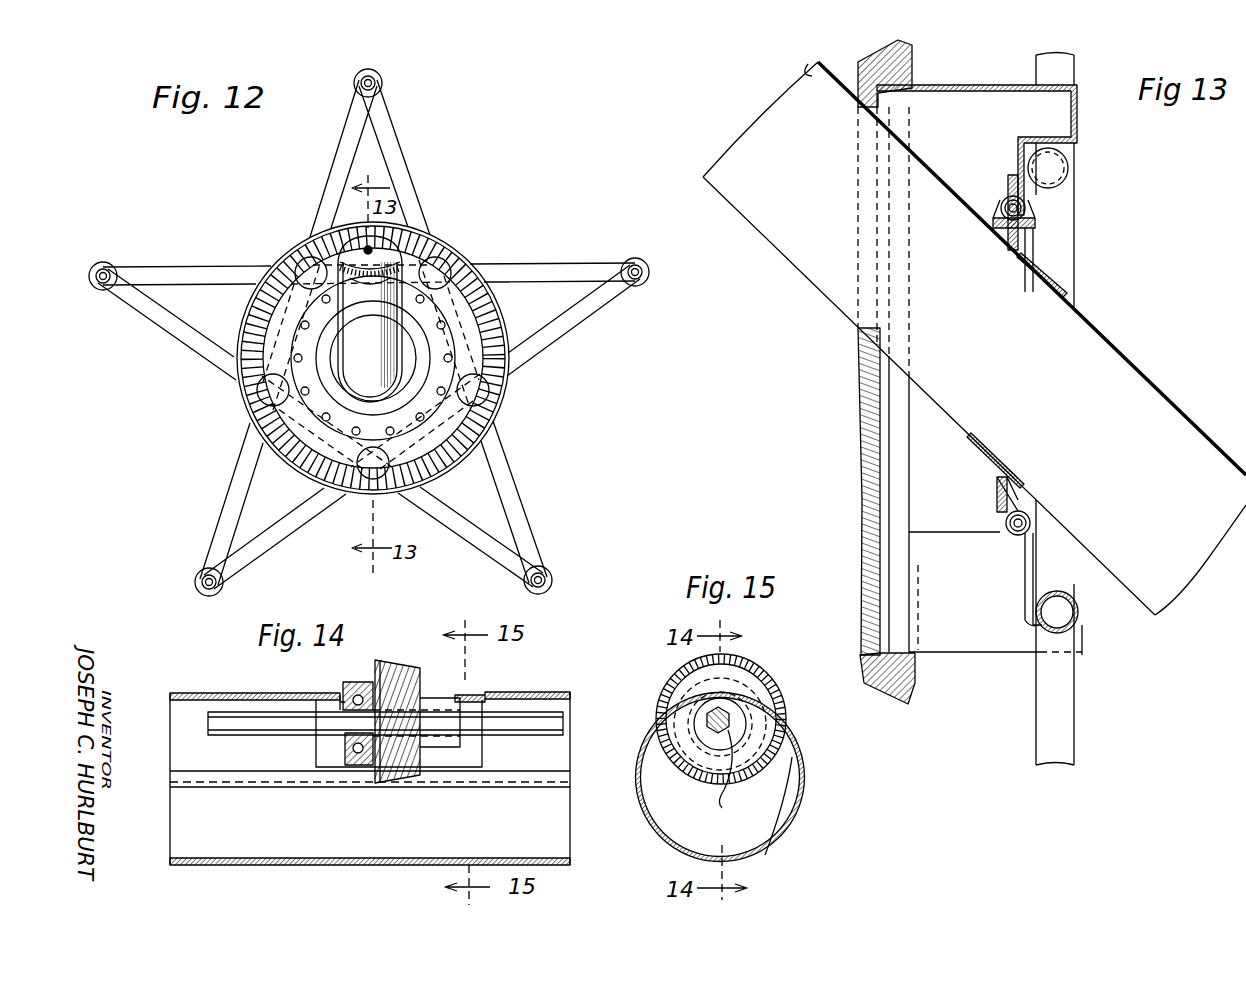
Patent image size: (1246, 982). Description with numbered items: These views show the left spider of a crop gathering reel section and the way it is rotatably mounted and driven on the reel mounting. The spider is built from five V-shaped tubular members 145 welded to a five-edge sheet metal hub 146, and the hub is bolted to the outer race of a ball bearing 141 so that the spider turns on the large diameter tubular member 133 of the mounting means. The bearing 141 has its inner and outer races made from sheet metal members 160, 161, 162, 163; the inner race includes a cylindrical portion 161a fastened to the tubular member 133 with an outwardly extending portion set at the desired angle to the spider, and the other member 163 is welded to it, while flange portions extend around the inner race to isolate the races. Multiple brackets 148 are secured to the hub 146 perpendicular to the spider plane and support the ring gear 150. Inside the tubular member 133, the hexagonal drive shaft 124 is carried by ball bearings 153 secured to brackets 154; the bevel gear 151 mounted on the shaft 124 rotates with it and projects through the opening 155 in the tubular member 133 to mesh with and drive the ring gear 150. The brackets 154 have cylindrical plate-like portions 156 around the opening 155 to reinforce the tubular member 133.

In FIG. 14, the hexagonal drive shaft 124 is at (520, 726).
In FIG. 15, the hexagonal drive shaft 124 is at (722, 780).
In FIG. 13, the tubular member 133 is at (1096, 332).
In FIG. 14, the tubular member 133 is at (232, 866).
In FIG. 15, the tubular member 133 is at (793, 820).
In FIG. 12, the ball bearing 141 is at (445, 406).
In FIG. 13, the ball bearing 141 is at (1041, 210).
In FIG. 12, the V-shaped tubular members 145 is at (415, 165).
In FIG. 13, the V-shaped tubular members 145 is at (1076, 64).
In FIG. 12, the sheet metal hub 146 is at (464, 258).
In FIG. 13, the brackets 148 is at (997, 85).
In FIG. 13, the ring gear 150 is at (893, 692).
In FIG. 14, the bevel gear 151 is at (420, 635).
In FIG. 15, the bevel gear 151 is at (752, 663).
In FIG. 14, the ball bearings 153 is at (340, 692).
In FIG. 14, the brackets 154 is at (370, 664).
In FIG. 15, the brackets 154 is at (792, 740).
In FIG. 14, the opening 155 is at (450, 698).
In FIG. 14, the cylindrical plate-like portions 156 is at (460, 755).
In FIG. 15, the cylindrical plate-like portions 156 is at (752, 858).
In FIG. 13, the sheet metal member 160 is at (1007, 240).
In FIG. 13, the inner race member 161 is at (1020, 240).
In FIG. 13, the cylindrical portion 161a is at (1055, 278).
In FIG. 13, the race member 162 is at (1009, 188).
In FIG. 13, the race member 163 is at (1048, 192).